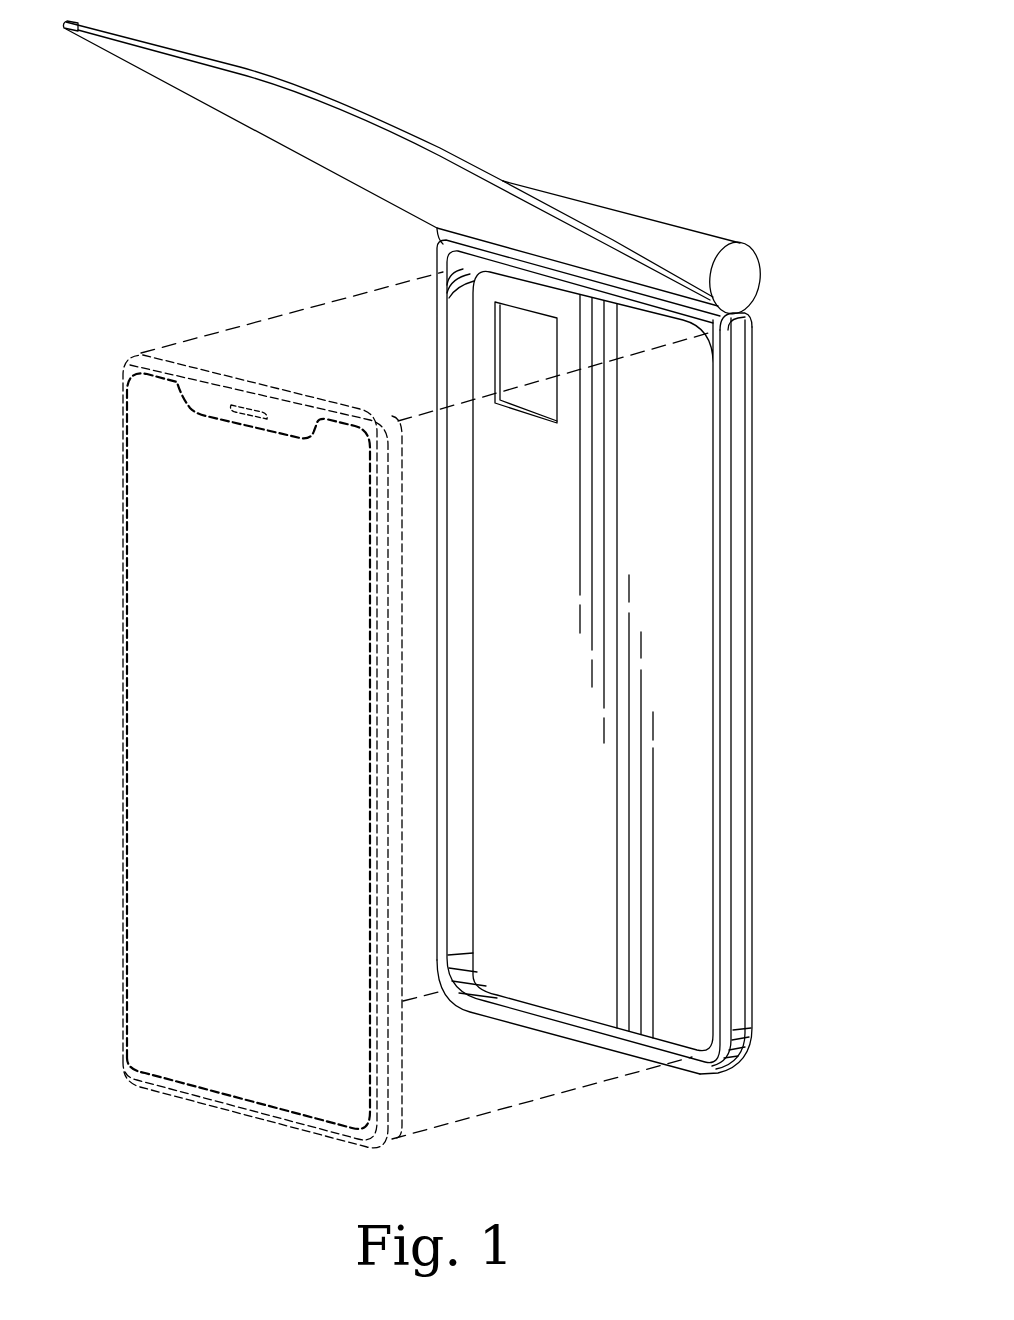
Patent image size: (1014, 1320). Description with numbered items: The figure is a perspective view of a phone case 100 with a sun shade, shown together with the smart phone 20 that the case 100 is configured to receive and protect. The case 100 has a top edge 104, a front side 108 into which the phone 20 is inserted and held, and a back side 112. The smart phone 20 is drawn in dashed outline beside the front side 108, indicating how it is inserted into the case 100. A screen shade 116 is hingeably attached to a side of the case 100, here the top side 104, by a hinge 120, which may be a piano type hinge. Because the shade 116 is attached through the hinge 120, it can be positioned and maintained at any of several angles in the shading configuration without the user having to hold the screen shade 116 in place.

The phone case 100 is at (708, 86).
The top edge 104 is at (590, 152).
The front side 108 is at (665, 527).
The back side 112 is at (778, 483).
The screen shade 116 is at (217, 60).
The hinge 120 is at (705, 228).
The smart phone 20 is at (217, 1115).